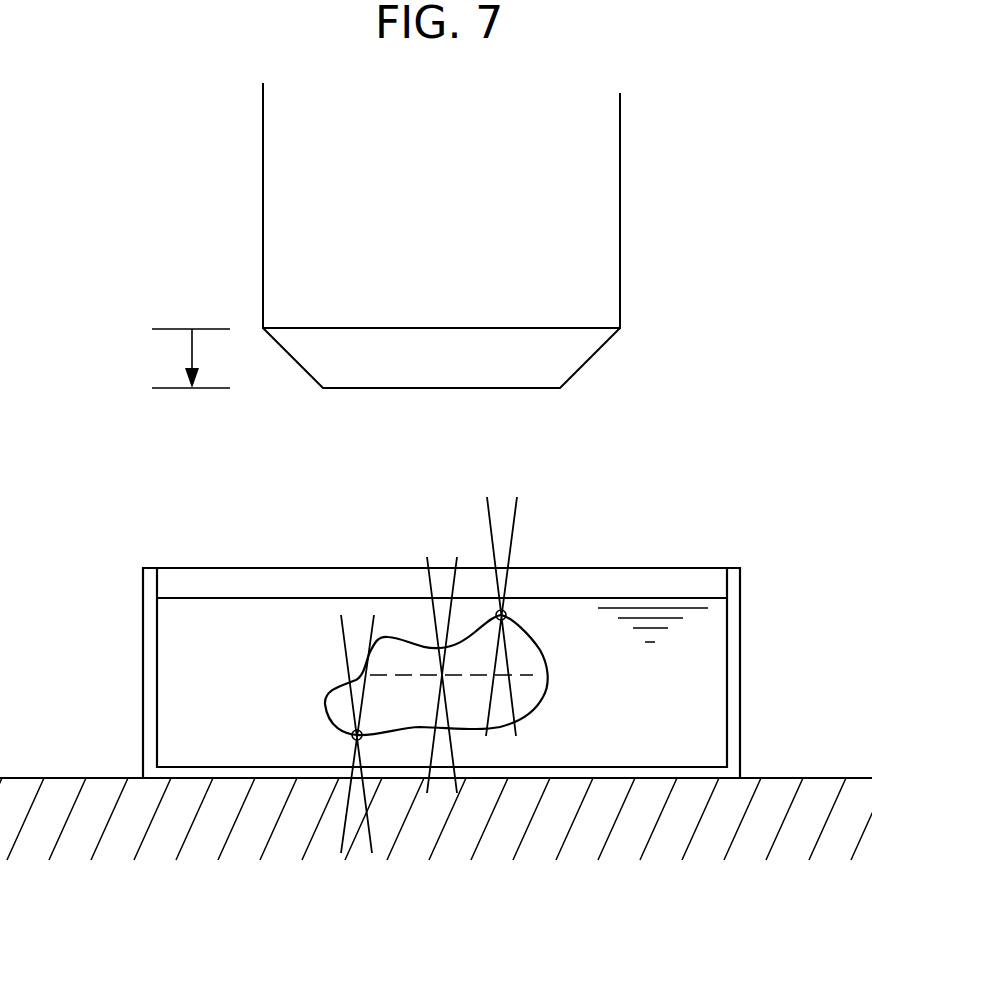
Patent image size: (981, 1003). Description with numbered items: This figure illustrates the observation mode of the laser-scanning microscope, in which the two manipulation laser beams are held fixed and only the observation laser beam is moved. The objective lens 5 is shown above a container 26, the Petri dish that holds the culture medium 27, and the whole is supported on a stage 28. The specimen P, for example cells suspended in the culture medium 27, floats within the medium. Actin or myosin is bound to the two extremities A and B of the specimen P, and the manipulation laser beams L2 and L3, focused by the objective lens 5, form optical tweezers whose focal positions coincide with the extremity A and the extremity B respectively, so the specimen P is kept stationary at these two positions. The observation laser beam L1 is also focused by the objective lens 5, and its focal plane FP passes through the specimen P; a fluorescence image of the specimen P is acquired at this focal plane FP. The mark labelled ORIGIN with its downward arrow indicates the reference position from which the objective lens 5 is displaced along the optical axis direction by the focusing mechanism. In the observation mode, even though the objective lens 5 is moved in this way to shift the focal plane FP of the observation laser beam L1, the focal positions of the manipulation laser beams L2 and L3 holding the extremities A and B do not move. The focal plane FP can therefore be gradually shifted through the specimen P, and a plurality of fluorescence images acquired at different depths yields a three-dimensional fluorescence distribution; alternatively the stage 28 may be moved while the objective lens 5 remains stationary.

The objective lens 5 is at (620, 145).
The liquid tank 26 is at (740, 622).
The culture medium 27 is at (647, 598).
The stage 28 is at (832, 778).
The specimen P is at (547, 690).
The focal plane FP is at (518, 673).
The observation laser beam L1 is at (432, 583).
The manipulation laser beam L2 is at (513, 513).
The manipulation laser beam L3 is at (343, 643).
The extremity A is at (515, 600).
The extremity B is at (340, 747).
The origin of coordinate system ORIGIN is at (144, 349).